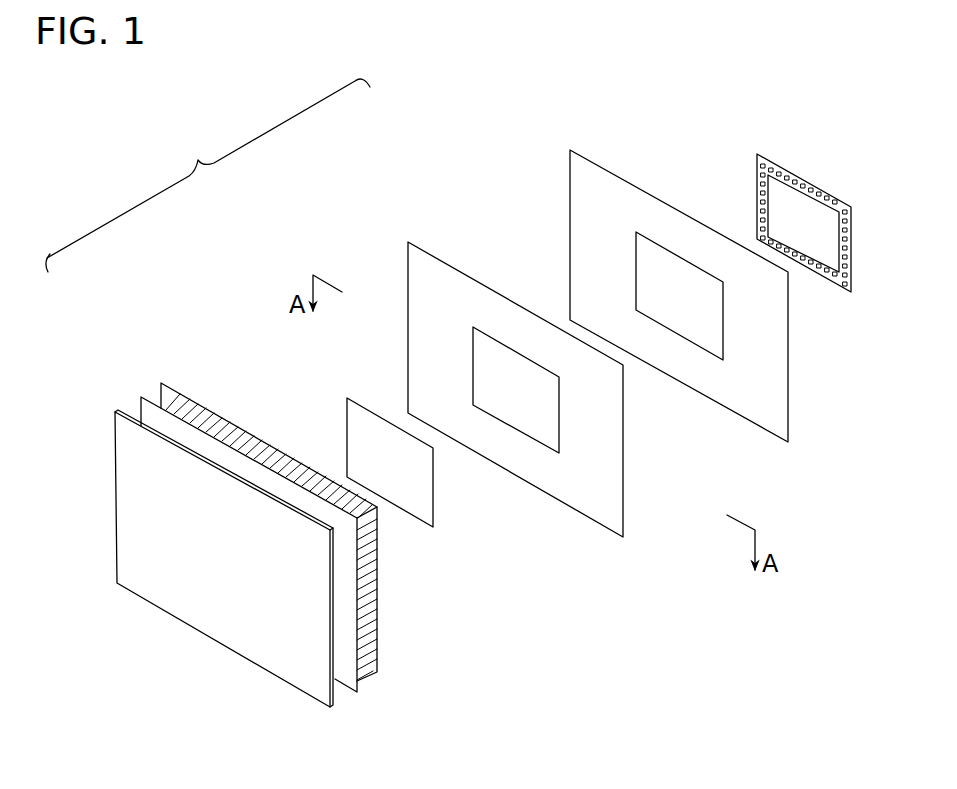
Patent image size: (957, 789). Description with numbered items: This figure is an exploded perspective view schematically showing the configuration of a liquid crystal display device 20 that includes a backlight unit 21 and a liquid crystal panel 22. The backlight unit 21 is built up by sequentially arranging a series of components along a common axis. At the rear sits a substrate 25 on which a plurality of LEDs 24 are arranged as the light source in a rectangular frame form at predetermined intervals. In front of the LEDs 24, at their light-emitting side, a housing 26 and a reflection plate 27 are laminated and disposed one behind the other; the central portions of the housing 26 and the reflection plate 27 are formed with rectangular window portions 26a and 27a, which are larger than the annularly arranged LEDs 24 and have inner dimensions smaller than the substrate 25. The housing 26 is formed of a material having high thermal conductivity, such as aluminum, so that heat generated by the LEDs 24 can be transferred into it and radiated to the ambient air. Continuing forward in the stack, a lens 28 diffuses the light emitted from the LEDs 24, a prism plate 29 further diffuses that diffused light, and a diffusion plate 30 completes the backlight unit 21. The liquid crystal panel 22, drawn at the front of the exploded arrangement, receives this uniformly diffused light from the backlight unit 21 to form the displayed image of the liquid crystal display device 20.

The liquid crystal display device 20 is at (208, 175).
The backlight unit 21 is at (406, 183).
The liquid crystal panel 22 is at (110, 468).
The LEDs 24 is at (804, 239).
The substrate 25 is at (830, 283).
The housing 26 is at (679, 318).
The window portion 26a is at (684, 260).
The reflection plate 27 is at (515, 418).
The window portion 27a is at (522, 353).
The lens 28 is at (410, 488).
The prism plate 29 is at (375, 608).
The diffusion plate 30 is at (347, 667).